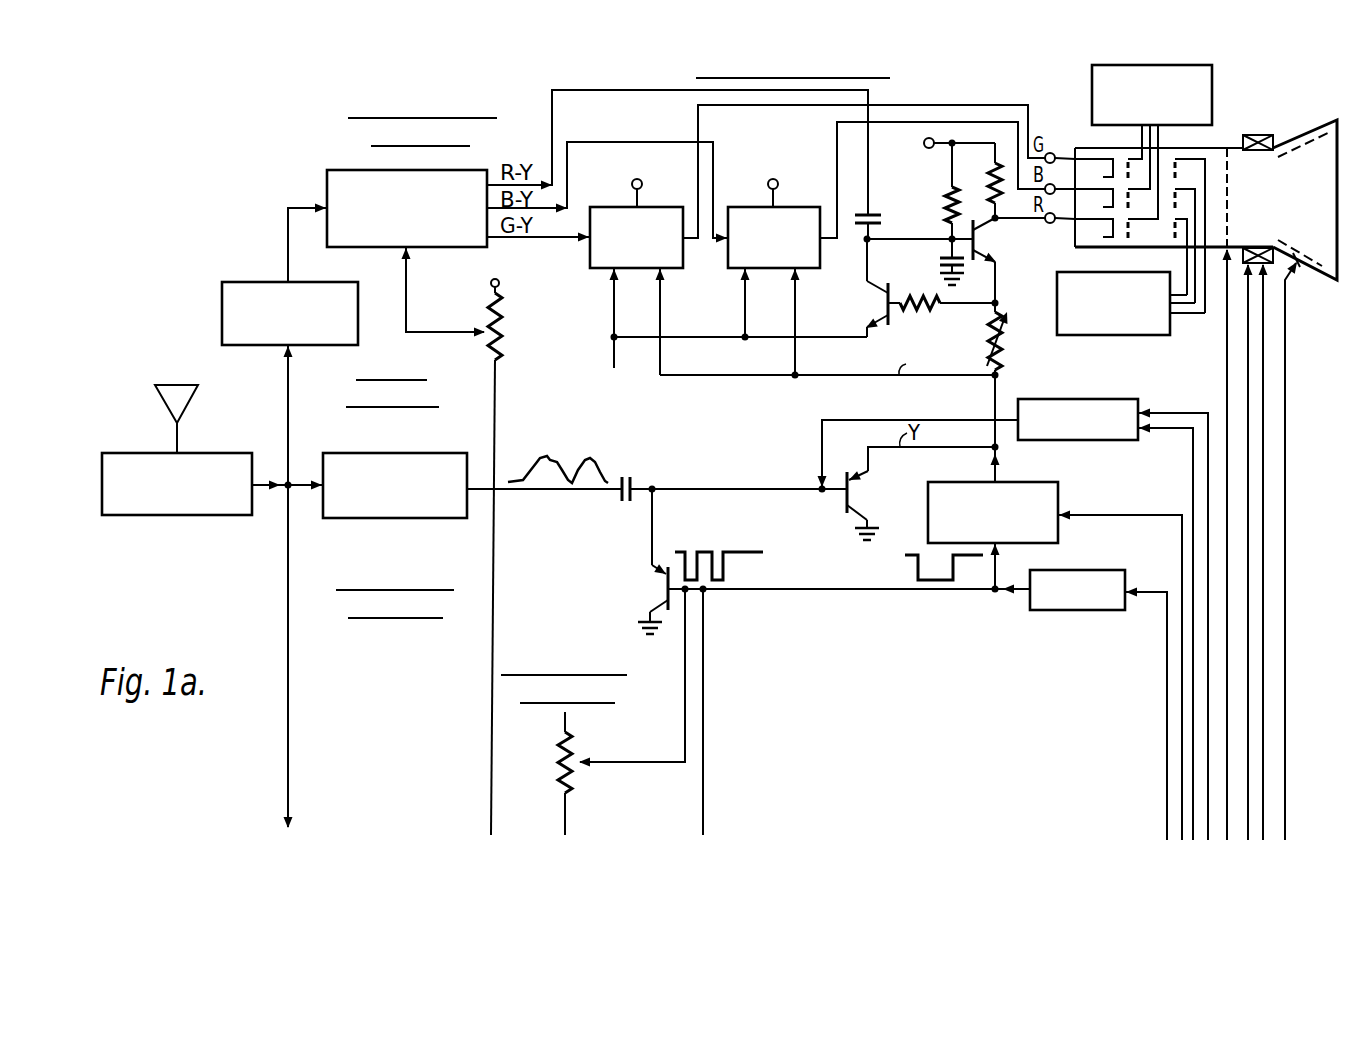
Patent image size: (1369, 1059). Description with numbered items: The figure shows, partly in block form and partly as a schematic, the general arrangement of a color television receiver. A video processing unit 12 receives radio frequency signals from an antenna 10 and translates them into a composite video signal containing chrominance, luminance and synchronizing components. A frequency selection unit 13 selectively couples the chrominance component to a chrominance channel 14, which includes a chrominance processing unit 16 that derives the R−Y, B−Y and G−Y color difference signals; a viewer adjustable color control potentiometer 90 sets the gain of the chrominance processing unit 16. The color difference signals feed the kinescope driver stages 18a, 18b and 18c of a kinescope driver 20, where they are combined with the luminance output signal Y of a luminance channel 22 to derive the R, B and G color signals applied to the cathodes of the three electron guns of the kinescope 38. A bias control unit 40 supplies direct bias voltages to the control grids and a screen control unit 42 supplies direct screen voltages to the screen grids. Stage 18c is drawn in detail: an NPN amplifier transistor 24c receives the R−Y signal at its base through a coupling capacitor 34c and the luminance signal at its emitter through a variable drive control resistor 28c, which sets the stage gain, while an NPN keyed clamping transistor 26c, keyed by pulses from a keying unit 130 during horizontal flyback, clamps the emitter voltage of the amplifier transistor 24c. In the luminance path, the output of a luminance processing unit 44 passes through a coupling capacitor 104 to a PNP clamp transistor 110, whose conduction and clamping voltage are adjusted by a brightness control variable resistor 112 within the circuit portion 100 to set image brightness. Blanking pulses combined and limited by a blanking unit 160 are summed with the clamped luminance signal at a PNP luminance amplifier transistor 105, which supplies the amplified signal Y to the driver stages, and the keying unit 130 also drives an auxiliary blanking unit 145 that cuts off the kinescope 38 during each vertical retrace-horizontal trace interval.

The antenna 10 is at (176, 384).
The video processing unit 12 is at (173, 516).
The frequency selection unit 13 is at (250, 282).
The chrominance channel 14 is at (432, 90).
The chrominance processing unit 16 is at (326, 192).
The kinescope driver stage 18a is at (655, 130).
The kinescope driver stage 18b is at (794, 141).
The kinescope driver stage 18c is at (922, 206).
The kinescope driver 20 is at (808, 47).
The luminance channel 22 is at (410, 562).
The amplifier transistor 24c is at (1032, 250).
The keyed clamping transistor 26c is at (875, 311).
The variable drive control resistor 28c is at (1006, 344).
The coupling capacitor 34c is at (860, 240).
The kinescope 38 is at (1332, 116).
The bias control unit 40 is at (1213, 95).
The screen control unit 42 is at (1057, 293).
The luminance processing unit 44 is at (344, 519).
The color control potentiometer 90 is at (540, 353).
The brightness control circuit portion 100 is at (790, 530).
The coupling capacitor 104 is at (650, 463).
The luminance amplifier transistor 105 is at (899, 506).
The clamp transistor 110 is at (655, 605).
The brightness control variable resistor 112 is at (547, 785).
The keying unit 130 is at (1087, 570).
The auxiliary blanking unit 145 is at (1062, 497).
The blanking unit 160 is at (1102, 380).